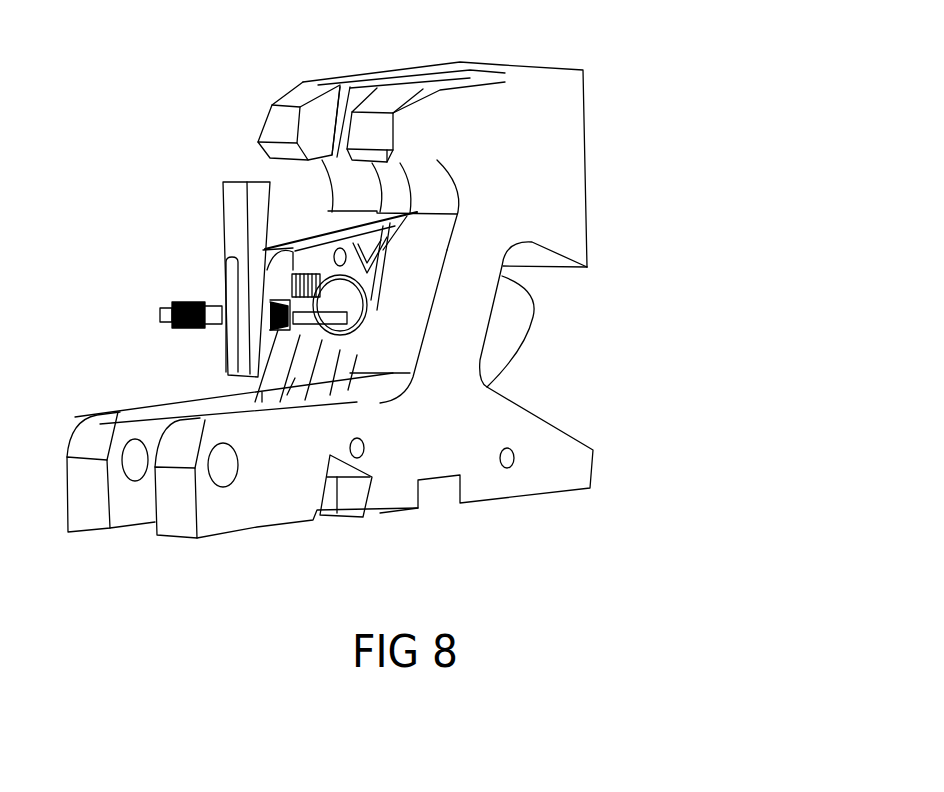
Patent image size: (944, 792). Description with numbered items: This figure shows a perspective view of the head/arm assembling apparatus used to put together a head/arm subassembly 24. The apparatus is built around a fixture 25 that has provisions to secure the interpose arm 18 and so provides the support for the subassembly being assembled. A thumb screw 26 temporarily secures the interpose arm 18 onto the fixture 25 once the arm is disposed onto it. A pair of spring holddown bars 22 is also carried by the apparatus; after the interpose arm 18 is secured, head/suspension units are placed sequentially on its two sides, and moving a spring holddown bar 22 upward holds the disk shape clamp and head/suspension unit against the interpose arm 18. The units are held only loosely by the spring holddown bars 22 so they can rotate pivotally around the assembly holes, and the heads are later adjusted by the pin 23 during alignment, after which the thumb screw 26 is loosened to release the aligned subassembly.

The interpose arm 18 is at (298, 258).
The spring holddown bars 22 is at (272, 392).
The pin 23 is at (275, 327).
The head/arm subassembly 24 is at (678, 187).
The fixture 25 is at (517, 170).
The thumb screw 26 is at (510, 328).